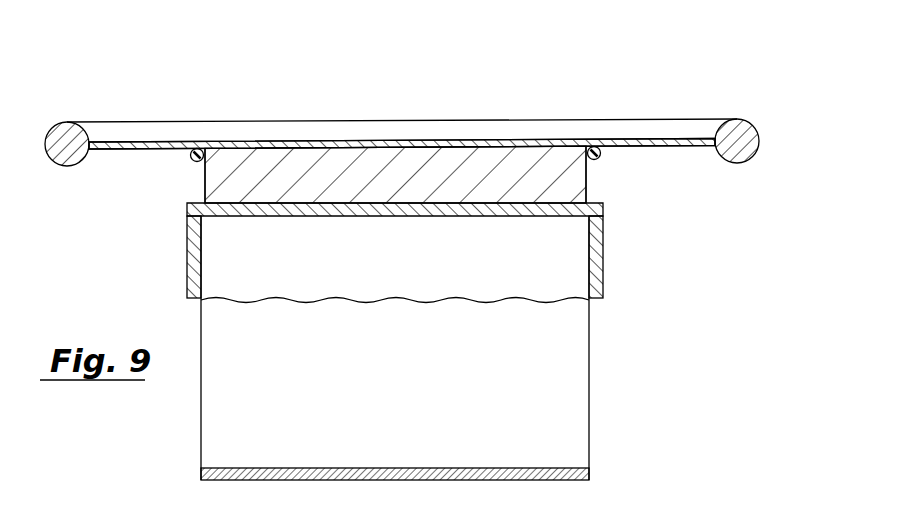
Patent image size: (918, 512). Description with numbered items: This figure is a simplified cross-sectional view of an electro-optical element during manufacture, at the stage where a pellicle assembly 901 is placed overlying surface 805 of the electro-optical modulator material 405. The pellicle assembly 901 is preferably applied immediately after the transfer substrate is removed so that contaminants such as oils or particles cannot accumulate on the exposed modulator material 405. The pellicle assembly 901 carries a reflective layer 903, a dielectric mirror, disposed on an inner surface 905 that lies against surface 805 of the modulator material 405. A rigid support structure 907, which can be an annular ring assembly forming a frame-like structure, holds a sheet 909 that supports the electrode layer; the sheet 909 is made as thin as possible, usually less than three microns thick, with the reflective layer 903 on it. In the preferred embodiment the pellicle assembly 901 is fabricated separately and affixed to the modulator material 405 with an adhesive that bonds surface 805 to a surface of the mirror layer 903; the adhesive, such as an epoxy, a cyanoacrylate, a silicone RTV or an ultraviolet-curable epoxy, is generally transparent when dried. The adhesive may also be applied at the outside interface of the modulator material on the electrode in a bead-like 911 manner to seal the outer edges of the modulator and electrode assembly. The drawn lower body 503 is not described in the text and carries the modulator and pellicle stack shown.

The pellicle assembly 901 is at (743, 106).
The reflective layer 903 is at (198, 148).
The surface 805 is at (300, 148).
The inner surface 905 is at (418, 140).
The sheet 909 is at (513, 121).
The bead 911 is at (600, 160).
The rigid support structure 907 is at (740, 160).
The electro-optical modulator material 405 is at (247, 177).
The container body 503 is at (589, 470).